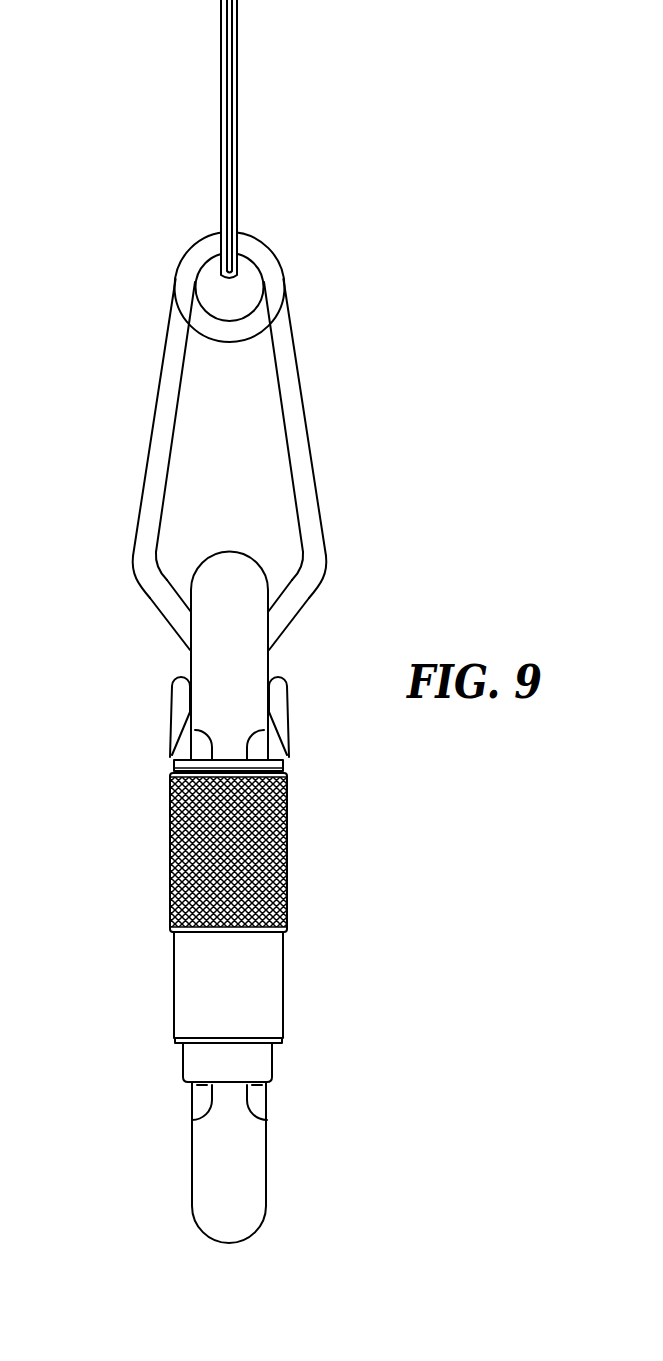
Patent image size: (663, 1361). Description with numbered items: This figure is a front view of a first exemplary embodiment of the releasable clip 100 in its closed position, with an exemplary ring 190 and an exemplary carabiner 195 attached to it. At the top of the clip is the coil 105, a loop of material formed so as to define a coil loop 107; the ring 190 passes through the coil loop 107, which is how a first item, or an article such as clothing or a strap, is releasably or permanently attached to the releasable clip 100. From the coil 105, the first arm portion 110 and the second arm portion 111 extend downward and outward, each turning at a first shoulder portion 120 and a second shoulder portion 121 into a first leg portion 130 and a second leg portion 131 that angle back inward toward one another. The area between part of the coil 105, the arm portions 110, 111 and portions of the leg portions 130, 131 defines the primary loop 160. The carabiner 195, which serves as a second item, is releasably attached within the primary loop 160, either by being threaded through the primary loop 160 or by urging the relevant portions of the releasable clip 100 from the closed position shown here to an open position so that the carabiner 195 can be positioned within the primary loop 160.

The releasable clip 100 is at (127, 242).
The coil 105 is at (207, 325).
The coil loop 107 is at (248, 283).
The first arm portion 110 is at (157, 467).
The second arm portion 111 is at (294, 412).
The first shoulder portion 120 is at (142, 558).
The second shoulder portion 121 is at (316, 555).
The first leg portion 130 is at (177, 618).
The second leg portion 131 is at (283, 612).
The primary loop 160 is at (207, 433).
The ring 190 is at (220, 40).
The carabiner 195 is at (170, 866).